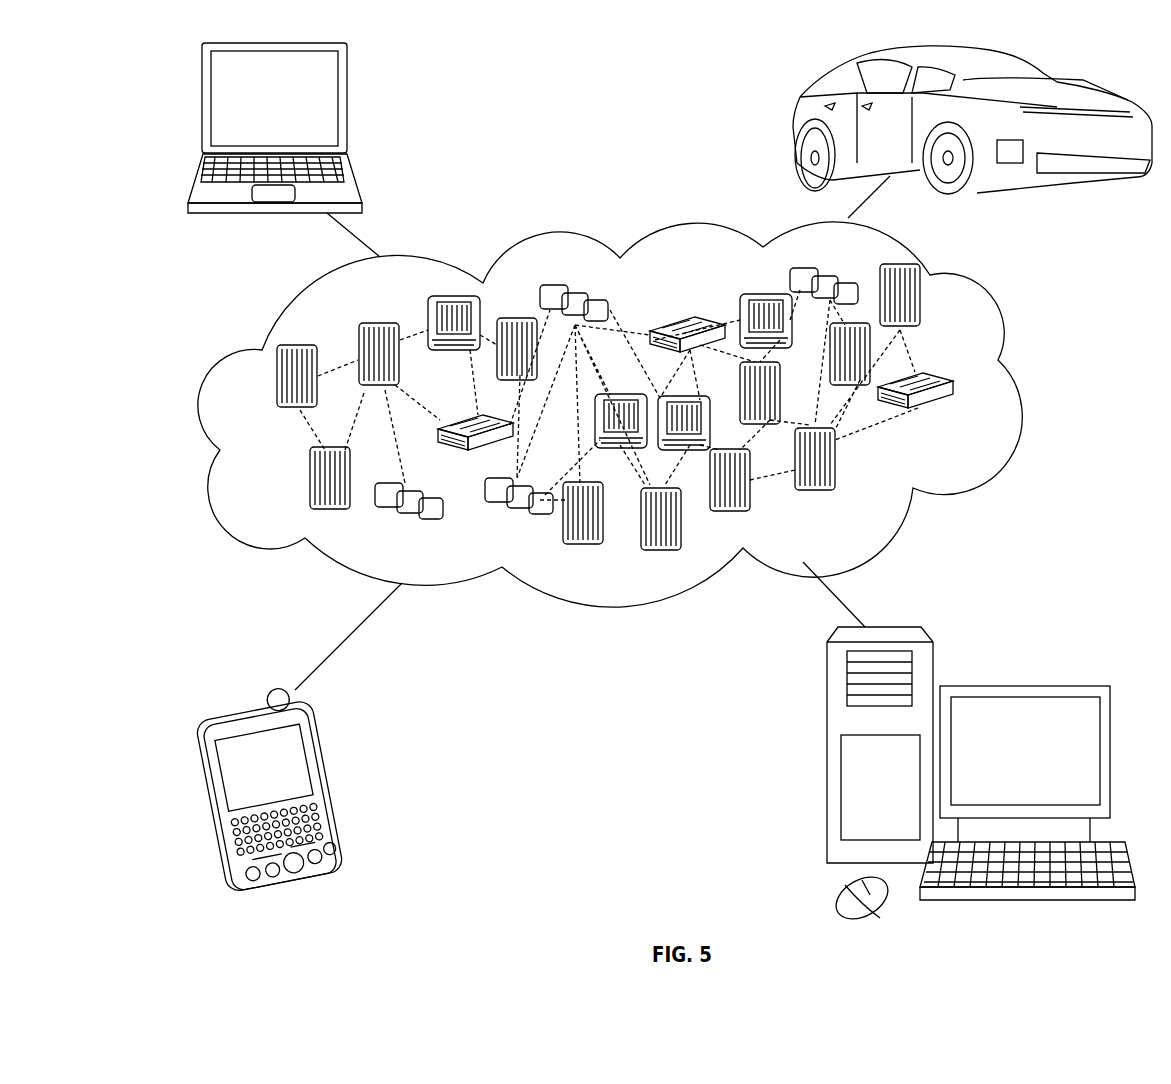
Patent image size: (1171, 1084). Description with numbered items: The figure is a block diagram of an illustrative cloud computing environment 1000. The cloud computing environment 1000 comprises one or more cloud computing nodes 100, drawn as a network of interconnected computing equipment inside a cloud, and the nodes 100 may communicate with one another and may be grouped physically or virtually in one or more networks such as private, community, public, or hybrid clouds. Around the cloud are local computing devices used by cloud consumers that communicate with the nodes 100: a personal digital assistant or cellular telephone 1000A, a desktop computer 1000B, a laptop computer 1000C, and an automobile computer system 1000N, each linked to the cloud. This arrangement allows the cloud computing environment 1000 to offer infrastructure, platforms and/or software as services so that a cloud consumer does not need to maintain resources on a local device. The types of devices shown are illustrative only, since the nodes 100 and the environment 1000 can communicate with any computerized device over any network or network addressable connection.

The cloud computing environment 1000 is at (651, 414).
The cloud computing nodes 100 is at (978, 421).
The personal digital assistant (PDA) or cellular telephone 1000A is at (338, 778).
The desktop computer 1000B is at (1018, 686).
The laptop computer 1000C is at (347, 107).
The automobile computer system 1000N is at (795, 122).